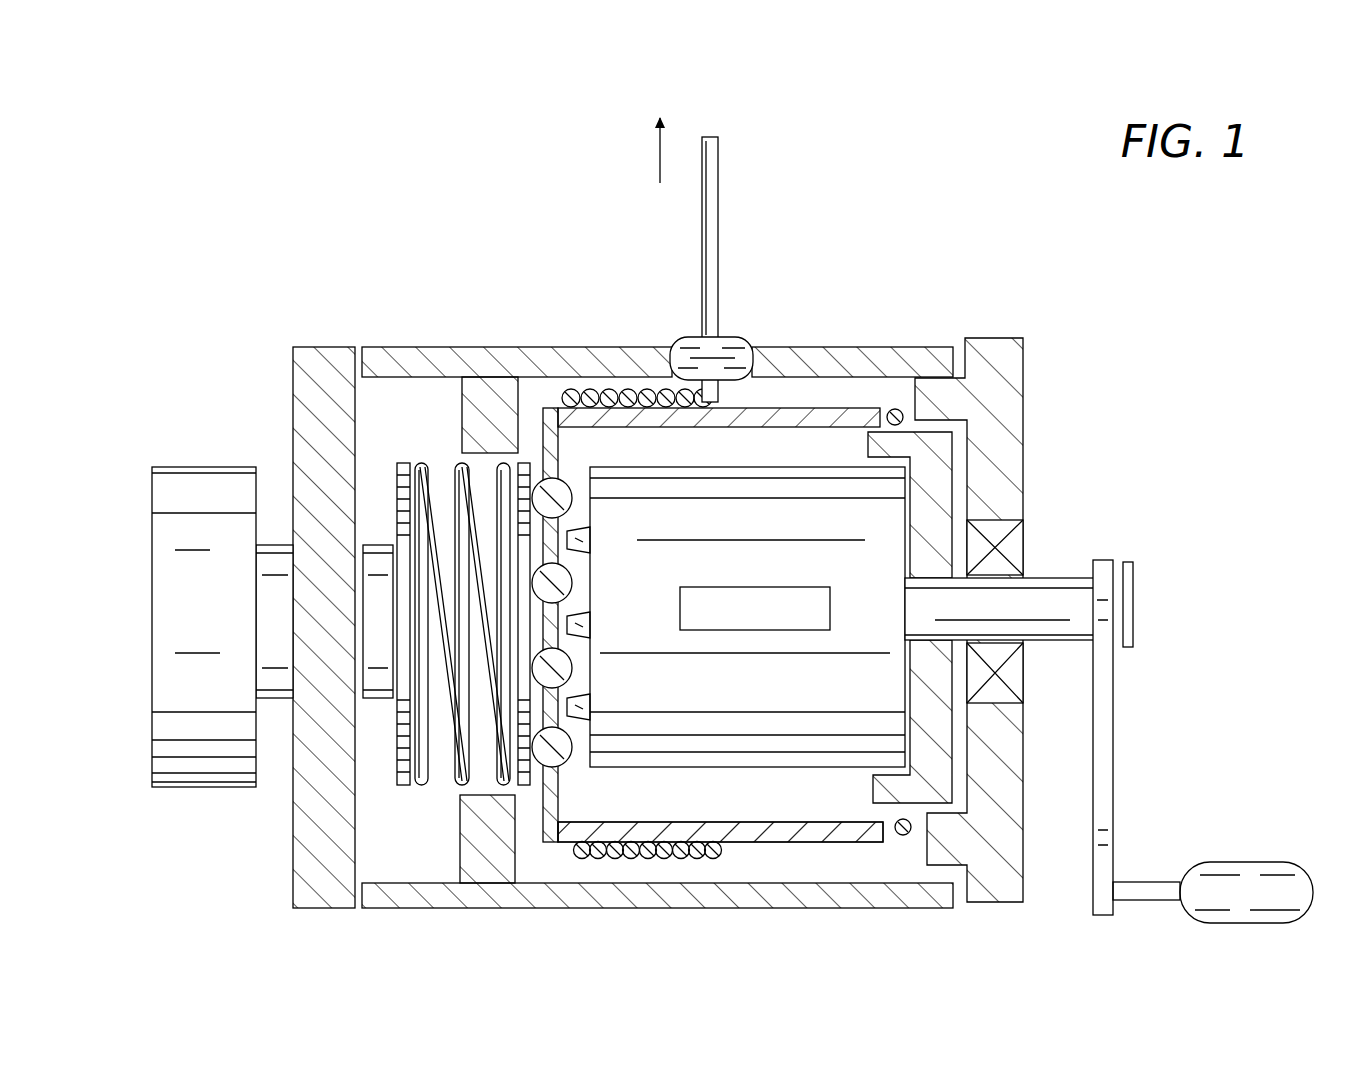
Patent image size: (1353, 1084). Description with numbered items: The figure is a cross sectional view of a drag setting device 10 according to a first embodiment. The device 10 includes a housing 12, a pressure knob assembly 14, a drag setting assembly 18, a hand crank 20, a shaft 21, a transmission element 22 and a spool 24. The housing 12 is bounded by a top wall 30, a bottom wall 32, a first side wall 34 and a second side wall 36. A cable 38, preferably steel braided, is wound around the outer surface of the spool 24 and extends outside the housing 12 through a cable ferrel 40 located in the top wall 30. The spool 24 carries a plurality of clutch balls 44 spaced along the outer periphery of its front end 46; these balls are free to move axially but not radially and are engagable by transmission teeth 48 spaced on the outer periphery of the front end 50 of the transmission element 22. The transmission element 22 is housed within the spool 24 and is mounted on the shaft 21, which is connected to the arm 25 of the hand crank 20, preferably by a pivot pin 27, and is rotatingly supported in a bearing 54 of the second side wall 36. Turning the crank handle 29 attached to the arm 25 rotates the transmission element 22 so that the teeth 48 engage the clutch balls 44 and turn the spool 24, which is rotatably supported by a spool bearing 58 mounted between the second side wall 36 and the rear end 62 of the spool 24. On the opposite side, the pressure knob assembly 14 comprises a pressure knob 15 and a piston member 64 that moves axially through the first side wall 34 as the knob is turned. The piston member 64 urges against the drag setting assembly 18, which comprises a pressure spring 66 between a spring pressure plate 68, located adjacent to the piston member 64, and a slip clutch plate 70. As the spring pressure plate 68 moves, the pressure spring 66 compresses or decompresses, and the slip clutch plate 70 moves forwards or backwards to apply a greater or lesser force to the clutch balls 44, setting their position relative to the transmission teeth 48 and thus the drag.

The drag setting device 10 is at (888, 258).
The housing 12 is at (1022, 328).
The pressure knob assembly 14 is at (199, 643).
The pressure knob 15 is at (152, 493).
The drag setting assembly 18 is at (377, 626).
The hand crank 20 is at (1148, 710).
The shaft 21 is at (1070, 578).
The transmission element 22 is at (822, 770).
The spool 24 is at (818, 850).
The arm 25 is at (1114, 826).
The pivot pin 27 is at (1135, 608).
The crank handle 29 is at (1256, 862).
The top wall 30 is at (641, 346).
The bottom wall 32 is at (722, 910).
The first side wall 34 is at (293, 405).
The second side wall 36 is at (1025, 443).
The cable 38 is at (719, 168).
The cable ferrel 40 is at (735, 330).
The clutch balls 44 is at (538, 483).
The front end of the spool 46 is at (541, 476).
The transmission teeth 48 is at (592, 724).
The front end of the transmission element 50 is at (587, 470).
The bearing 54 is at (1025, 546).
The spool bearing 58 is at (905, 418).
The rear end of the spool 62 is at (1024, 690).
The piston member 64 is at (275, 705).
The pressure spring 66 is at (416, 462).
The spring pressure plate 68 is at (398, 784).
The slip clutch plate 70 is at (527, 790).